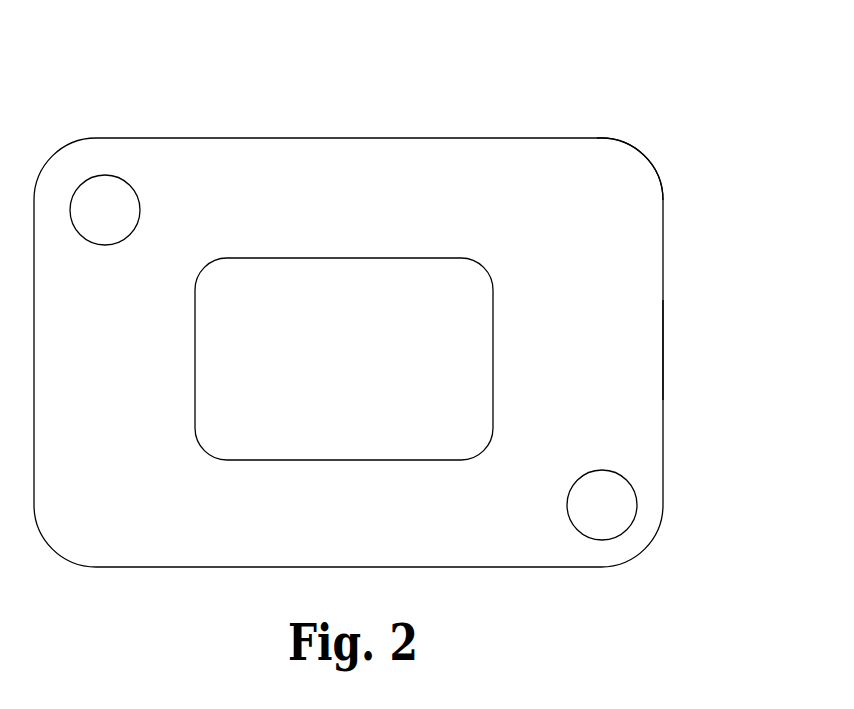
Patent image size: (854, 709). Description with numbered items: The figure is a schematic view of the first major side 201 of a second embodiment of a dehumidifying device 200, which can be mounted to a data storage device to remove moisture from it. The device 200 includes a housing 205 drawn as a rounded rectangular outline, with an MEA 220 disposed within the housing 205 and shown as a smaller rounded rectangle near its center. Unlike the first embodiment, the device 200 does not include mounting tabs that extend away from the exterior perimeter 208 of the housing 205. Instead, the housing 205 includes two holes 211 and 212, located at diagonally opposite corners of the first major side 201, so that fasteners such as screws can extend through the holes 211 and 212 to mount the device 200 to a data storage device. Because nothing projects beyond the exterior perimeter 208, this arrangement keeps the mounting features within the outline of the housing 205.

The dehumidifying device 200 is at (526, 51).
The first major side 201 is at (562, 343).
The housing 205 is at (605, 191).
The exterior perimeter 208 is at (666, 339).
The hole 211 is at (602, 523).
The hole 212 is at (107, 200).
The MEA 220 is at (332, 370).